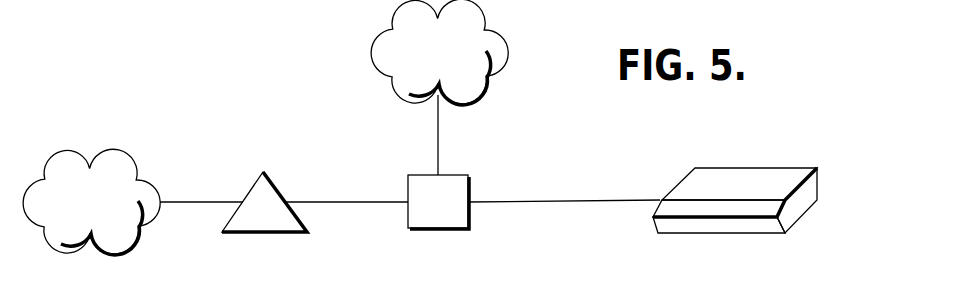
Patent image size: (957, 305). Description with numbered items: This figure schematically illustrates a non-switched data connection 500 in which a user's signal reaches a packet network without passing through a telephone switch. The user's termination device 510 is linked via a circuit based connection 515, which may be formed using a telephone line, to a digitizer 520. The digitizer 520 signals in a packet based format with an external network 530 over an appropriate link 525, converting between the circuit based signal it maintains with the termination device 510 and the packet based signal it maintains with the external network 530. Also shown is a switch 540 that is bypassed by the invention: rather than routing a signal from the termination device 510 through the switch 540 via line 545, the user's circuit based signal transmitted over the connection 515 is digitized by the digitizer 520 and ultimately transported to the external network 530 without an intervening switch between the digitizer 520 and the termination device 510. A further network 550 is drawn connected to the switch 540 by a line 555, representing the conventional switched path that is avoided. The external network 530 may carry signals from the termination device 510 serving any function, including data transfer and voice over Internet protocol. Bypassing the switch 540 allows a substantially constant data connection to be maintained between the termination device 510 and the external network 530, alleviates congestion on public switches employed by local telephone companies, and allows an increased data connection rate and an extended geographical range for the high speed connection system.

The network system 500 is at (234, 52).
The termination device 510 is at (777, 168).
The circuit based connection 515 is at (600, 202).
The digitizer 520 is at (437, 230).
The link 525 is at (439, 153).
The external network 530 is at (508, 62).
The switch 540 is at (272, 233).
The line 545 is at (365, 200).
The network 550 is at (108, 152).
The communication link 555 is at (173, 201).